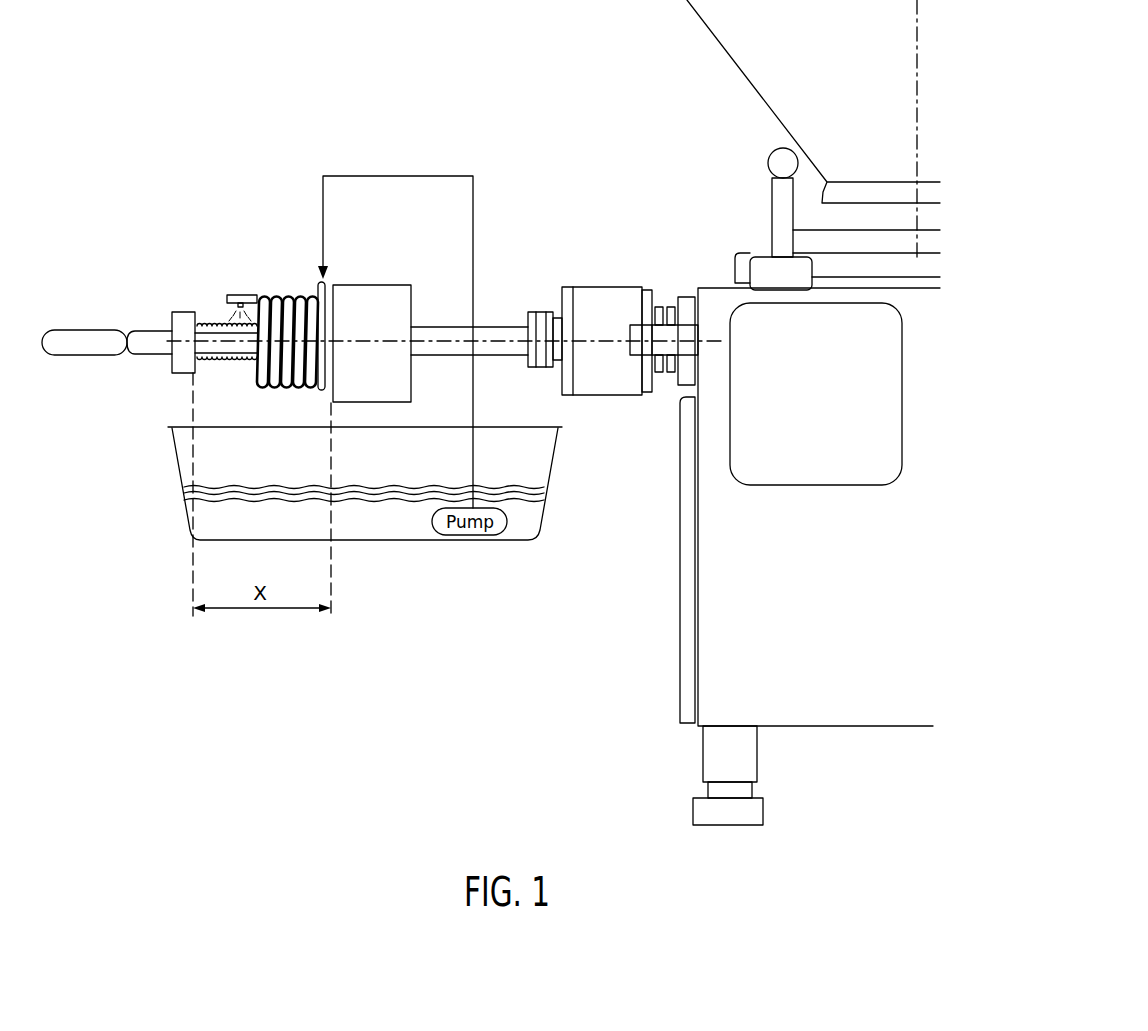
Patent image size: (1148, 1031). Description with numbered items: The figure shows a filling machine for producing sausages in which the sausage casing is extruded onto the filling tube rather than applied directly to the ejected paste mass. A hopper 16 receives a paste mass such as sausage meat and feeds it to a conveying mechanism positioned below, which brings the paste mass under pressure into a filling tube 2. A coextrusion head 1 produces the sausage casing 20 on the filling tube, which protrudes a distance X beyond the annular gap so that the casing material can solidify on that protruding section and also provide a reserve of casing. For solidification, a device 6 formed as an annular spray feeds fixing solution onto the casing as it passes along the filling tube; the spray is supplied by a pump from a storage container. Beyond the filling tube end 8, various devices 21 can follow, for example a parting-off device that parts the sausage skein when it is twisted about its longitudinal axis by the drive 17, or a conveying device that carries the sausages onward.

The coextrusion head 1 is at (378, 292).
The filling tube 2 is at (447, 342).
The device for feeding fixing solution 6 is at (281, 286).
The filling tube end 8 is at (195, 357).
The hopper 16 is at (737, 66).
The drive 17 is at (619, 300).
The sausage casing 20 is at (207, 318).
The devices arranged after the filling tube end 21 is at (186, 312).